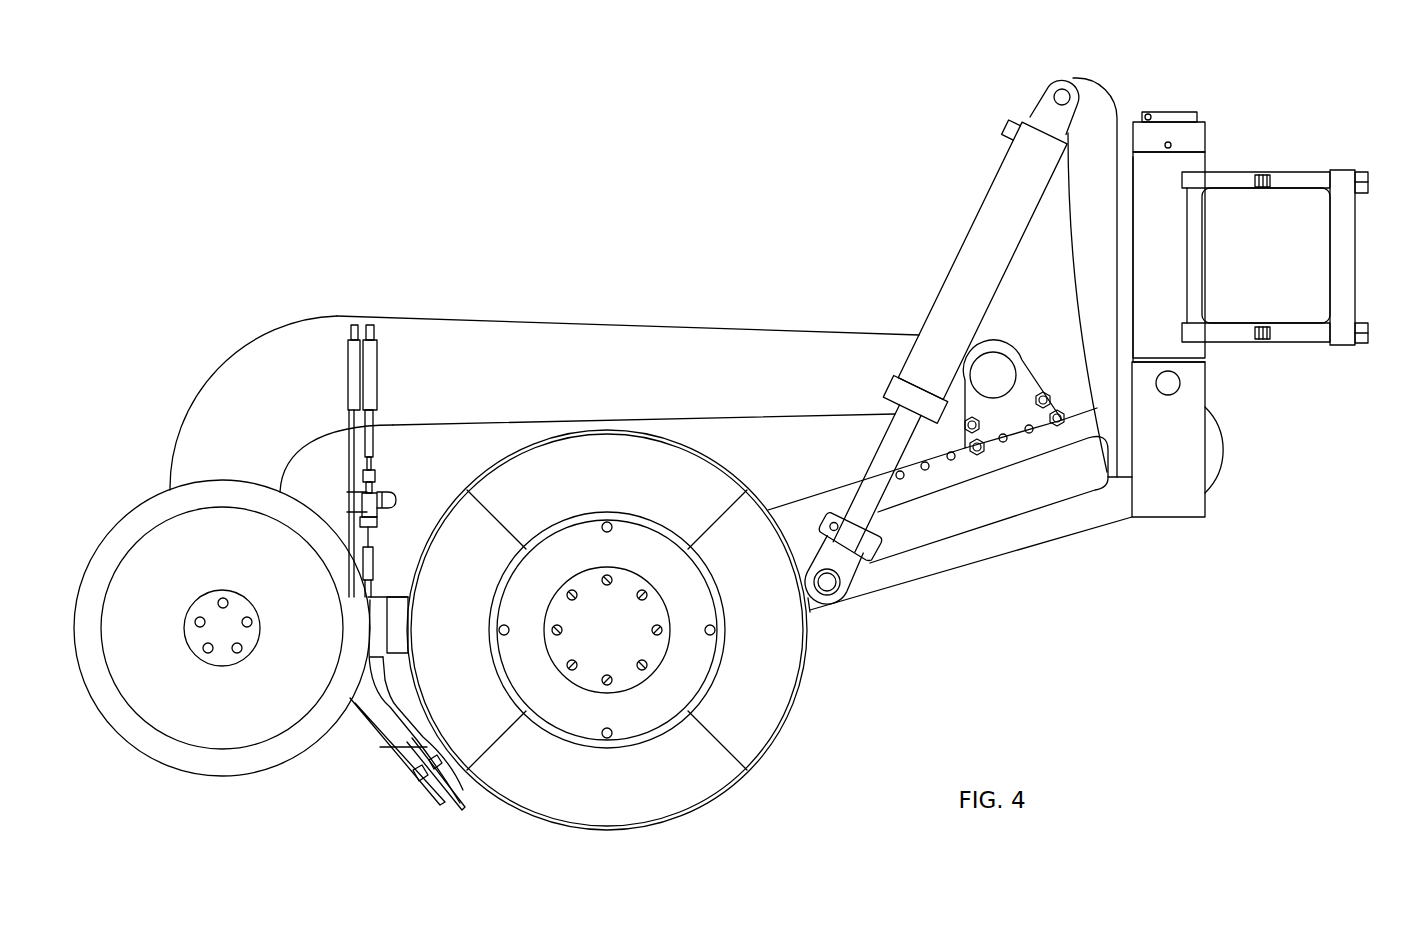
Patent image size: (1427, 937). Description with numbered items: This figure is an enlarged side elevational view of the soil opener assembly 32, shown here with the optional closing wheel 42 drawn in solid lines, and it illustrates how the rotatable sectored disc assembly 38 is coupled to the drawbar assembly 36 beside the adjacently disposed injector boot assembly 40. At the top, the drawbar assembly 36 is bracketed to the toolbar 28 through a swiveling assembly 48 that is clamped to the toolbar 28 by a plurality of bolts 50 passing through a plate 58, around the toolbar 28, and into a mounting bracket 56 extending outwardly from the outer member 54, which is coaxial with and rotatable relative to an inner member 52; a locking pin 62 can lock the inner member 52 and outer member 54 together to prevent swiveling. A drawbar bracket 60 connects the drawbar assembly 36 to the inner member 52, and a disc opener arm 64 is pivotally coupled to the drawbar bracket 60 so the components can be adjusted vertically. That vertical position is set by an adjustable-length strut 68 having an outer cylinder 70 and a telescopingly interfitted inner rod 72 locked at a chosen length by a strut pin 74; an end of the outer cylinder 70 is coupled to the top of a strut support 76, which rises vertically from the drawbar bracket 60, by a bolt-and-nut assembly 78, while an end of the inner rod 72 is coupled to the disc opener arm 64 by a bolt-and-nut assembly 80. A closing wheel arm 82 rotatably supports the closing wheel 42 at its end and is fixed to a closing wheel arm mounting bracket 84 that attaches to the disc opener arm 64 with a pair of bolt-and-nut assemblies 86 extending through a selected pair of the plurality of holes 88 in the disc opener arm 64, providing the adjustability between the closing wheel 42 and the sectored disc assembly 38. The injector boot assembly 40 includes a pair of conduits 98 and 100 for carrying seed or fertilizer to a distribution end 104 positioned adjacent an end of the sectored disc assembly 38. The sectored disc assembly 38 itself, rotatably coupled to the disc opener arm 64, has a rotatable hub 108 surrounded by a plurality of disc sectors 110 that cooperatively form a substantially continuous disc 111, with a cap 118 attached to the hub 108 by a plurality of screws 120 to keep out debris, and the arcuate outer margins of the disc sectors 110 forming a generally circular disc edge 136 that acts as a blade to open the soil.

The toolbar 28 is at (1250, 226).
The soil opener assembly 32 is at (342, 178).
The drawbar assembly 36 is at (809, 275).
The sectored disc assembly 38 is at (663, 631).
The injector boot assembly 40 is at (370, 770).
The closing wheel 42 is at (130, 532).
The swiveling assembly 48 is at (1242, 297).
The bolts 50 is at (1305, 185).
The inner member 52 is at (1187, 116).
The outer member 54 is at (1195, 133).
The mounting bracket 56 is at (1222, 334).
The plate 58 is at (1347, 267).
The drawbar bracket 60 is at (1180, 502).
The locking pin 62 is at (1180, 386).
The disc opener arm 64 is at (1003, 543).
The adjustable-length strut 68 is at (942, 358).
The outer cylinder 70 is at (967, 272).
The inner rod 72 is at (873, 487).
The strut pin 74 is at (1003, 128).
The strut support 76 is at (1087, 267).
The bolt-and-nut assembly 78 is at (1054, 93).
The bolt-and-nut assembly 80 is at (835, 587).
The closing wheel arm 82 is at (252, 368).
The closing wheel arm mounting bracket 84 is at (1017, 356).
The bolt-and-nut assemblies 86 is at (1043, 400).
The holes 88 is at (897, 473).
The conduit 98 is at (372, 433).
The conduit 100 is at (357, 457).
The distribution end 104 is at (441, 820).
The hub 108 is at (700, 652).
The disc sectors 110 is at (637, 486).
The disc 111 is at (771, 493).
The cap 118 is at (615, 667).
The screws 120 is at (603, 580).
The disc edge 136 is at (760, 775).